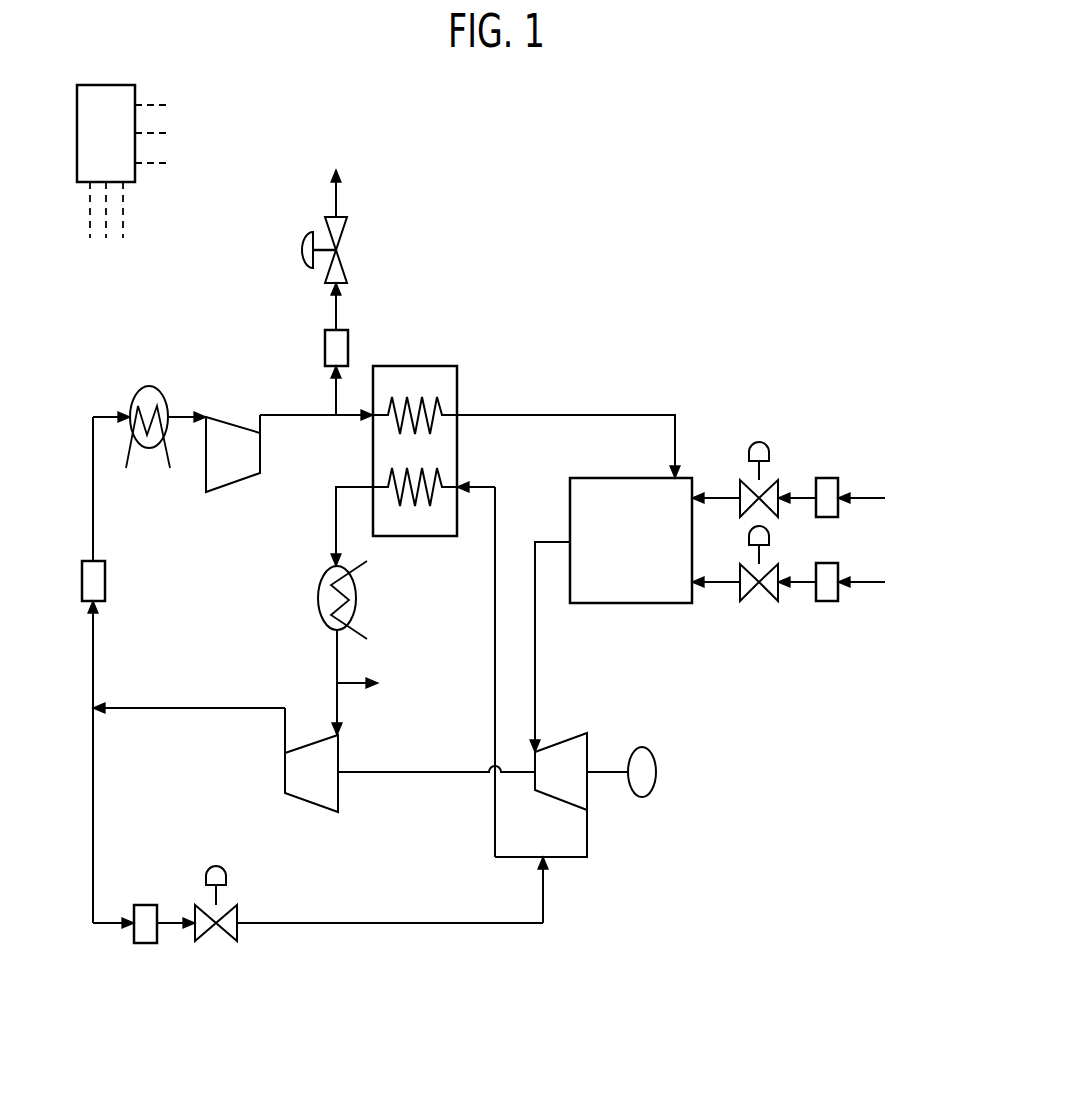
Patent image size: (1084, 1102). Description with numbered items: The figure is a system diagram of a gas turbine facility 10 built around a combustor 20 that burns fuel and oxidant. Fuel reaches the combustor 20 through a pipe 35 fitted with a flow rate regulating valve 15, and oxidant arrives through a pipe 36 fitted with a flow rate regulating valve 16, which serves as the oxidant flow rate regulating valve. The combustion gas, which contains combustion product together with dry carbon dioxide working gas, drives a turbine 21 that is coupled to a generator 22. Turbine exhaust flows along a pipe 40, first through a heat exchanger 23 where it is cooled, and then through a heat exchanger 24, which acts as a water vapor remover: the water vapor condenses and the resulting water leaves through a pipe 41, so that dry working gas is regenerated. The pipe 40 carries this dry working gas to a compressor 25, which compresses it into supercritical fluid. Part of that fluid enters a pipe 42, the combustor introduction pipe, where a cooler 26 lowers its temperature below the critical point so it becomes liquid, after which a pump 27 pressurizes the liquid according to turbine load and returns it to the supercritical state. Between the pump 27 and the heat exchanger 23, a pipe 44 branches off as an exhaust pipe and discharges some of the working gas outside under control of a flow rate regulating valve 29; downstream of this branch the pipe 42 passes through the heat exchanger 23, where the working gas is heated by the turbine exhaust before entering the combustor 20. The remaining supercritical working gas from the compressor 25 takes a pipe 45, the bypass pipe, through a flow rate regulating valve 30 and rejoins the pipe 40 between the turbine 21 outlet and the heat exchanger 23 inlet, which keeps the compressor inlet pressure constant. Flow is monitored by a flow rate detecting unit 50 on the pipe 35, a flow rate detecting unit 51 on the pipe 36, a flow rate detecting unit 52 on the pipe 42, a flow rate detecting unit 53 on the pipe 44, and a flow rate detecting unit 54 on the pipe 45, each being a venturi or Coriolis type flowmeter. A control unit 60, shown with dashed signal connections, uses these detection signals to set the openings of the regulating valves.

The gas turbine facility 10 is at (668, 133).
The flow rate regulating valve 15 is at (767, 481).
The flow rate regulating valve 16 is at (768, 602).
The combustor 20 is at (631, 603).
The turbine 21 is at (561, 740).
The generator 22 is at (644, 747).
The heat exchanger 23 is at (415, 365).
The heat exchanger 24 is at (319, 599).
The compressor 25 is at (307, 805).
The cooler 26 is at (150, 450).
The pump 27 is at (237, 492).
The flow rate regulating valve 29 is at (348, 258).
The flow rate regulating valve 30 is at (228, 943).
The pipe 35 is at (860, 497).
The pipe 36 is at (859, 588).
The pipe 40 is at (563, 859).
The pipe 41 is at (354, 690).
The pipe 42 is at (93, 655).
The pipe 44 is at (333, 316).
The pipe 45 is at (93, 840).
The flow rate detecting unit 50 is at (828, 478).
The flow rate detecting unit 51 is at (828, 602).
The flow rate detecting unit 52 is at (83, 585).
The flow rate detecting unit 53 is at (325, 351).
The flow rate detecting unit 54 is at (144, 944).
The control unit 60 is at (79, 140).